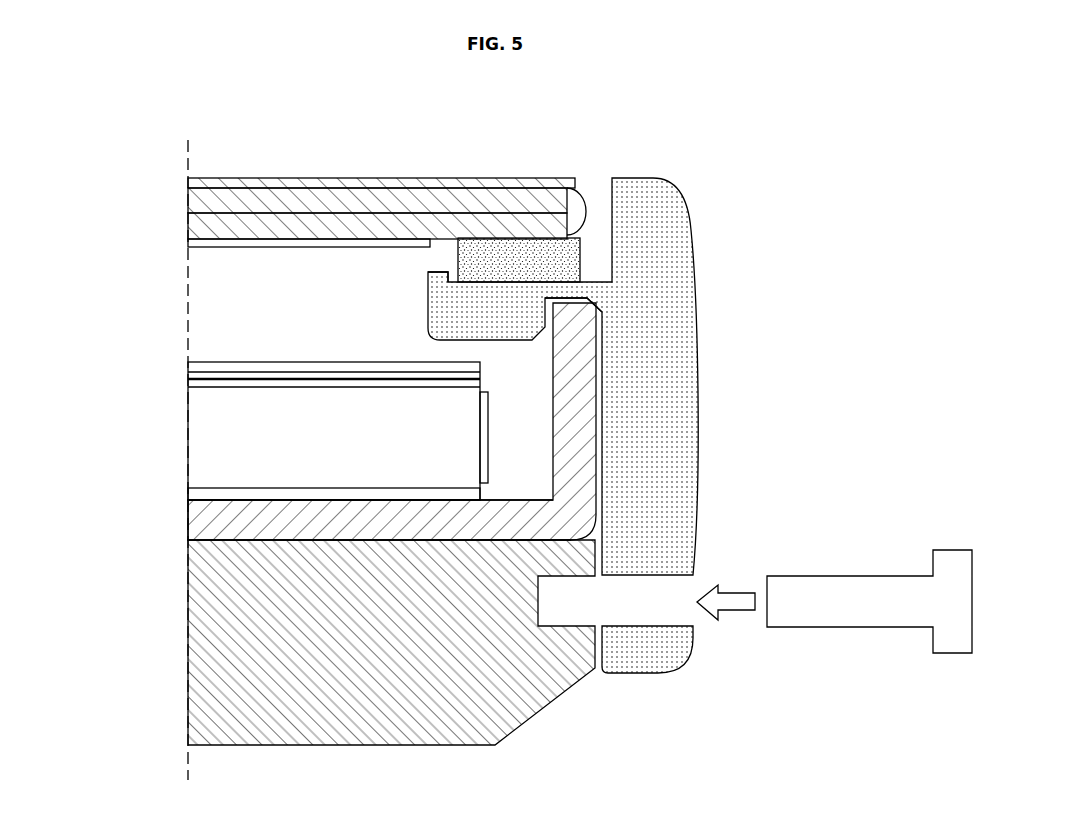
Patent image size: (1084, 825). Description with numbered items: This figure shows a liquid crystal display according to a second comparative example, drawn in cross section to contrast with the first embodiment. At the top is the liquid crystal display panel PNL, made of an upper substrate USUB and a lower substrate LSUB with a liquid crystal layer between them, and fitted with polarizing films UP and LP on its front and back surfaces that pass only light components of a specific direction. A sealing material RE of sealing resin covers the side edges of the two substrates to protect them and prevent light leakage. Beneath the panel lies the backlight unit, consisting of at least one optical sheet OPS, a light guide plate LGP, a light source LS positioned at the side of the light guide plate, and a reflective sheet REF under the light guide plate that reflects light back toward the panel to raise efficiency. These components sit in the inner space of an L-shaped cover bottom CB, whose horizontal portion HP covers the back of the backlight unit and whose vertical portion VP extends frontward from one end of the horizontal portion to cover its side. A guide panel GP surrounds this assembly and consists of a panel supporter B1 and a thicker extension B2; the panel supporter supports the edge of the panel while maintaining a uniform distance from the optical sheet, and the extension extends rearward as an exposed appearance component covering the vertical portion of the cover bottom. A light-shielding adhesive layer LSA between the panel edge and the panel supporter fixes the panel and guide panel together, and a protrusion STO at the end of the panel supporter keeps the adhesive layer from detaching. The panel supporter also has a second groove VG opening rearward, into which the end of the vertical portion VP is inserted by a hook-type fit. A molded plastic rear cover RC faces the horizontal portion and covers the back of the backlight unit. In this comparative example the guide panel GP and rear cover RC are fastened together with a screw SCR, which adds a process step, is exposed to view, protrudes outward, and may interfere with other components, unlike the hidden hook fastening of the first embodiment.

The liquid crystal display panel PNL is at (316, 213).
The polarizing film UP is at (195, 181).
The upper substrate USUB is at (195, 201).
The lower substrate LSUB is at (195, 227).
The polarizing film LP is at (280, 249).
The sealing material RE is at (580, 200).
The adhesive layer LSA is at (513, 250).
The protrusion STO is at (440, 270).
The second groove VG is at (598, 300).
The panel supporter B1 is at (518, 322).
The extension B2 is at (678, 375).
The guide panel GP is at (611, 398).
The vertical portion VP is at (577, 416).
The horizontal portion HP is at (505, 512).
The cover bottom CB is at (497, 421).
The optical sheet OPS is at (176, 362).
The light source LS is at (483, 423).
The light guide plate LGP is at (195, 455).
The reflective sheet REF is at (195, 493).
The rear cover RC is at (195, 643).
The screw SCR is at (856, 618).